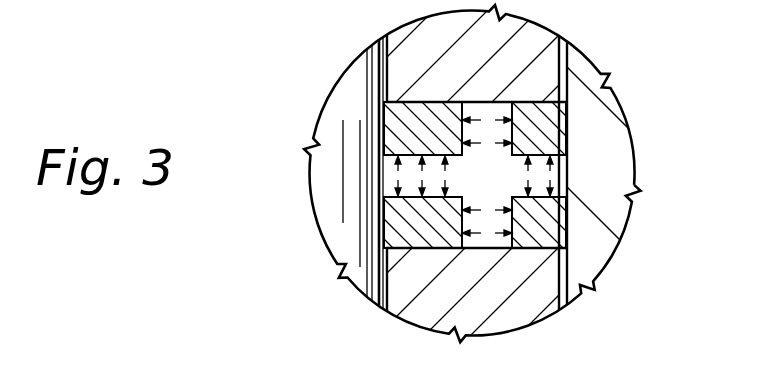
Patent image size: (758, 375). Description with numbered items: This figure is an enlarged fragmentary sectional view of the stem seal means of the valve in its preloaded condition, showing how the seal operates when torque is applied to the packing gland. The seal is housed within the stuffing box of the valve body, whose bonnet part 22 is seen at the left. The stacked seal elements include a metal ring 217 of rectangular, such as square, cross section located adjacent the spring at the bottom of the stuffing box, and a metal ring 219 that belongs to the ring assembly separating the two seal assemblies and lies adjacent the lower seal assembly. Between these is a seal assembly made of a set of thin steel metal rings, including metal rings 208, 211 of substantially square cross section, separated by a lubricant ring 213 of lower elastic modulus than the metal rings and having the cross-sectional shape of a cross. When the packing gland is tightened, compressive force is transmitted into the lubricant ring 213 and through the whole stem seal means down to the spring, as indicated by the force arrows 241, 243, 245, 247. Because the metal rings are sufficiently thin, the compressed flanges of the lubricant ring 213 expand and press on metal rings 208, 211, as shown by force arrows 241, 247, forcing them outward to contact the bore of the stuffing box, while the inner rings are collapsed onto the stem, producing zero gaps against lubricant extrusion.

The bonnet part 22 is at (363, 88).
The metal ring 208 is at (410, 125).
The force arrow 243 is at (395, 168).
The force arrow 245 is at (395, 179).
The metal ring 211 is at (397, 223).
The metal ring 219 is at (525, 42).
The force arrow 241 is at (481, 116).
The lubricant ring 213 is at (570, 177).
The metal ring 217 is at (540, 270).
The force arrow 247 is at (467, 240).